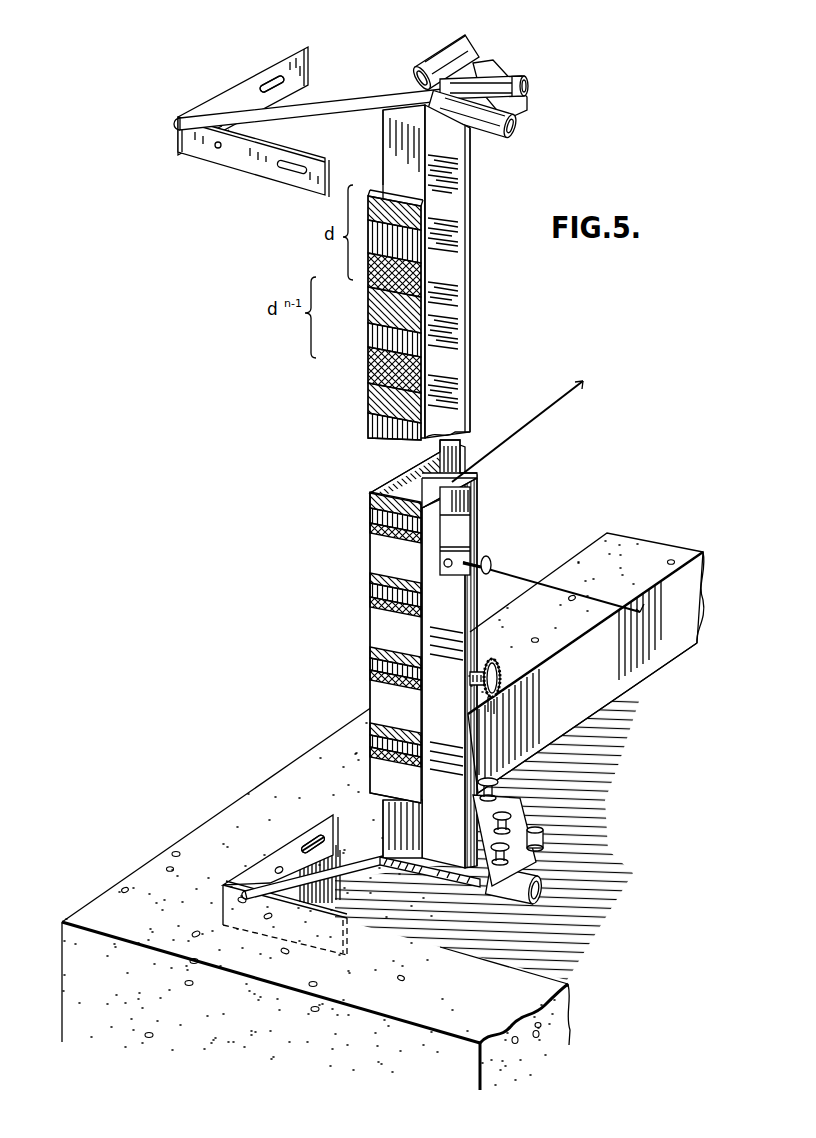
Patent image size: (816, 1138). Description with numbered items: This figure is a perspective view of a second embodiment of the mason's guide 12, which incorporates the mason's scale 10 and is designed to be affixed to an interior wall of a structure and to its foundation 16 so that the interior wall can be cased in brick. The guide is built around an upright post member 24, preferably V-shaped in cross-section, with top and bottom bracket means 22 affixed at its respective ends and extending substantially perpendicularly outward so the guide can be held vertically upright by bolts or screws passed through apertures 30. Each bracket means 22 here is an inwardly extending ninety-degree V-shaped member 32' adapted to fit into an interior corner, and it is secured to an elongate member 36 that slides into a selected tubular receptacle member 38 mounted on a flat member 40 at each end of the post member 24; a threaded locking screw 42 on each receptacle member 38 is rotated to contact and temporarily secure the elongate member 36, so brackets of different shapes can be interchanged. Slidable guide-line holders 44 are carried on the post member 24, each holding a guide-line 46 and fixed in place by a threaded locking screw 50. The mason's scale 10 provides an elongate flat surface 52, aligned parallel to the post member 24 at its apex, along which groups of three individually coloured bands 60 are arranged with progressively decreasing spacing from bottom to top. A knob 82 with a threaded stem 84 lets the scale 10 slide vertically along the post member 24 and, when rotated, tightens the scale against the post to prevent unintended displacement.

The mason's guide 12 is at (388, 42).
The bracket means 22 is at (240, 73).
The elongate member 36 is at (355, 872).
The receptacle member 38 is at (497, 78).
The flat member 40 is at (530, 99).
The mason's scale 10 is at (372, 190).
The coloured bands 60 is at (372, 280).
The post member 24 is at (472, 314).
The inwardly extending V-shaped member 32' is at (210, 464).
The guide-line 46 is at (532, 420).
The threaded locking screw 50 is at (486, 566).
The guide-line holder 44 is at (445, 568).
The elongate flat surface 52 is at (408, 638).
The knob 82 is at (505, 683).
The threaded stem 84 is at (490, 712).
The foundation 16 is at (680, 642).
The threaded locking screw 42 is at (488, 798).
The apertures 30 is at (300, 855).